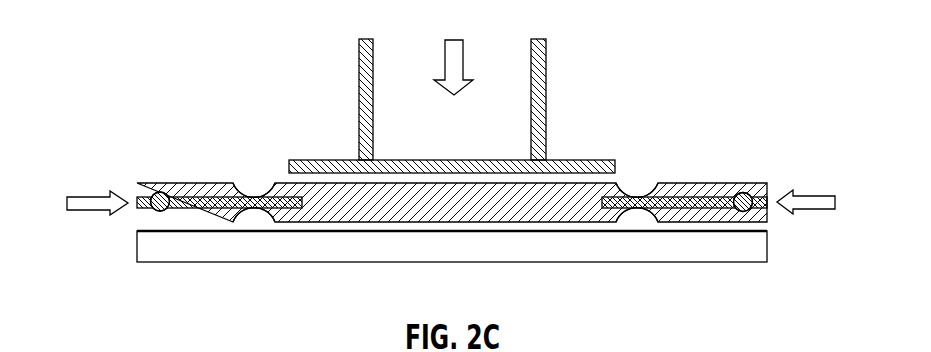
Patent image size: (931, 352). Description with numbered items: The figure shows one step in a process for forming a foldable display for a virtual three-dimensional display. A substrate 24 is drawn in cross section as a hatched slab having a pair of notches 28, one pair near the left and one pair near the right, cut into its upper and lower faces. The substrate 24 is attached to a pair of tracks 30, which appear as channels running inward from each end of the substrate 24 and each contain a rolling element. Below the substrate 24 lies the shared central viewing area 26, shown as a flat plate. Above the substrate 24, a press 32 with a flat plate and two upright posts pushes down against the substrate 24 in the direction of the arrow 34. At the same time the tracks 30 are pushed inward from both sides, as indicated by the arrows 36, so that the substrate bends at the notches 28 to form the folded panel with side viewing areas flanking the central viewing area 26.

The substrate 24 is at (718, 180).
The shared central viewing area 26 is at (718, 263).
The notches 28 is at (252, 196).
The tracks 30 is at (198, 195).
The press 32 is at (359, 97).
The arrow 34 is at (465, 62).
The arrows 36 is at (90, 195).